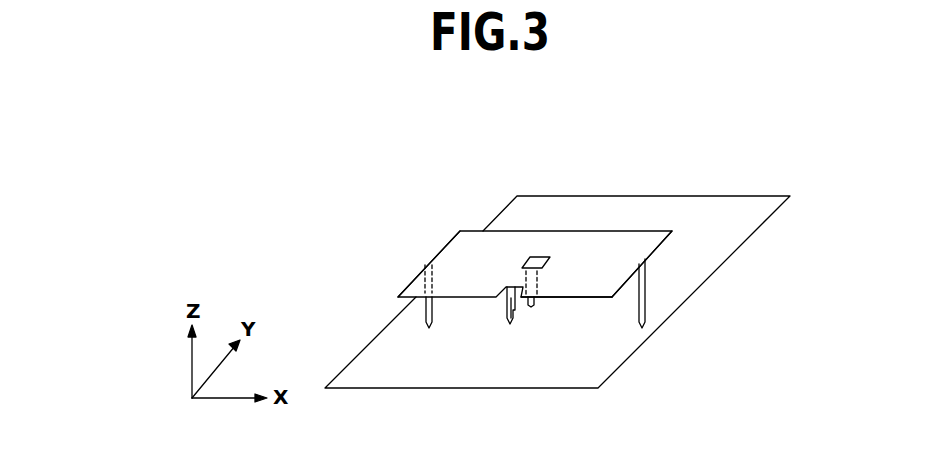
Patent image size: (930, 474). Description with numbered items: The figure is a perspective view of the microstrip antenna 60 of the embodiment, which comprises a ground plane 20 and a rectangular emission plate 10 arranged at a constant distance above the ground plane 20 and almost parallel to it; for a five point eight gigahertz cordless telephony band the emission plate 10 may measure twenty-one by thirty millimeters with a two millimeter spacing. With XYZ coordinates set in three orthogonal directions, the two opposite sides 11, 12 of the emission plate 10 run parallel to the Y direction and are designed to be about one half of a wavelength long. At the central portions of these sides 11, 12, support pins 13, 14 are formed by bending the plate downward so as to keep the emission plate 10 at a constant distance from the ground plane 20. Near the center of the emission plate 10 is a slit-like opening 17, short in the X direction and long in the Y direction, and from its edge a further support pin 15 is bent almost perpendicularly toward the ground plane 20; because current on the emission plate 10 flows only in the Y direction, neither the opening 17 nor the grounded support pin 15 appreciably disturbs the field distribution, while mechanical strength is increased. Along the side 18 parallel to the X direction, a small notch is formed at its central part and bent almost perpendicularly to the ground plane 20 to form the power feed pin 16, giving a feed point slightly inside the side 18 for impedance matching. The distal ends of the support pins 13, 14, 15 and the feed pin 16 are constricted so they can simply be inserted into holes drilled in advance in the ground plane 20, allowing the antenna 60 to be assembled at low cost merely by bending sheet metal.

The microstrip antenna 60 is at (468, 172).
The ground plane 20 is at (704, 215).
The emission plate 10 is at (614, 247).
The side of emission plate 11 is at (657, 247).
The side of emission plate 12 is at (446, 245).
The support pin 13 is at (645, 290).
The support pin 14 is at (424, 317).
The support pin 15 is at (531, 309).
The power feed pin 16 is at (507, 325).
The slit-like opening 17 is at (539, 256).
The side of emission plate 18 is at (597, 298).